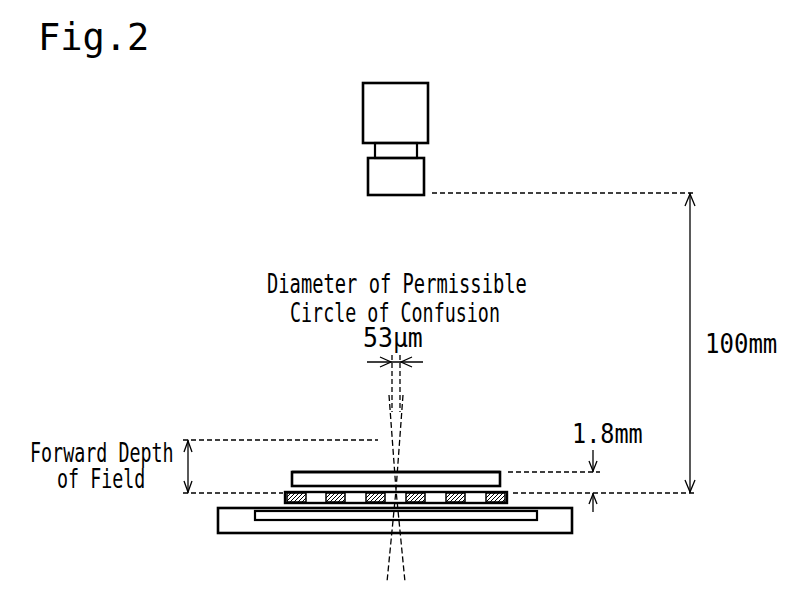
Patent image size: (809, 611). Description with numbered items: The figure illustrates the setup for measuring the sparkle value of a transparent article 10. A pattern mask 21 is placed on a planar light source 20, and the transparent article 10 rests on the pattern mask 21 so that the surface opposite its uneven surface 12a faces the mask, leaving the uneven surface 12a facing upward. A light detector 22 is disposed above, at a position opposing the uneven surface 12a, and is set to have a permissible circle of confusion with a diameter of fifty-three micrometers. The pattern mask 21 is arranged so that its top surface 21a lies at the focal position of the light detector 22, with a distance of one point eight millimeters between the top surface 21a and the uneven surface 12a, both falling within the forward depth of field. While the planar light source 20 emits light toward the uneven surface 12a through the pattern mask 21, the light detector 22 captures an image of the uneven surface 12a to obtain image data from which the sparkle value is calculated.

The light detector 22 is at (430, 114).
The transparent article 10 is at (292, 476).
The uneven surface 12a is at (445, 472).
The pattern mask 21 is at (297, 504).
The top surface 21a is at (496, 490).
The planar light source 20 is at (520, 535).